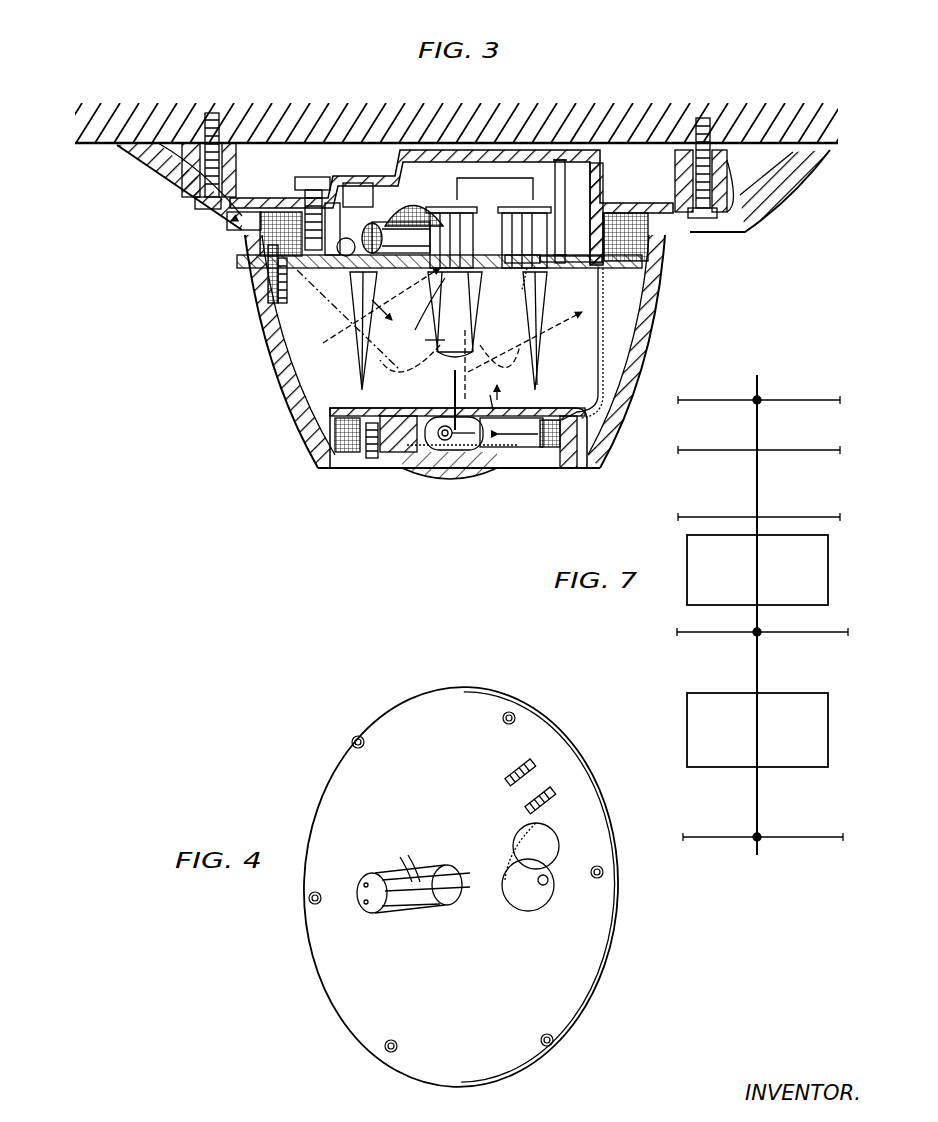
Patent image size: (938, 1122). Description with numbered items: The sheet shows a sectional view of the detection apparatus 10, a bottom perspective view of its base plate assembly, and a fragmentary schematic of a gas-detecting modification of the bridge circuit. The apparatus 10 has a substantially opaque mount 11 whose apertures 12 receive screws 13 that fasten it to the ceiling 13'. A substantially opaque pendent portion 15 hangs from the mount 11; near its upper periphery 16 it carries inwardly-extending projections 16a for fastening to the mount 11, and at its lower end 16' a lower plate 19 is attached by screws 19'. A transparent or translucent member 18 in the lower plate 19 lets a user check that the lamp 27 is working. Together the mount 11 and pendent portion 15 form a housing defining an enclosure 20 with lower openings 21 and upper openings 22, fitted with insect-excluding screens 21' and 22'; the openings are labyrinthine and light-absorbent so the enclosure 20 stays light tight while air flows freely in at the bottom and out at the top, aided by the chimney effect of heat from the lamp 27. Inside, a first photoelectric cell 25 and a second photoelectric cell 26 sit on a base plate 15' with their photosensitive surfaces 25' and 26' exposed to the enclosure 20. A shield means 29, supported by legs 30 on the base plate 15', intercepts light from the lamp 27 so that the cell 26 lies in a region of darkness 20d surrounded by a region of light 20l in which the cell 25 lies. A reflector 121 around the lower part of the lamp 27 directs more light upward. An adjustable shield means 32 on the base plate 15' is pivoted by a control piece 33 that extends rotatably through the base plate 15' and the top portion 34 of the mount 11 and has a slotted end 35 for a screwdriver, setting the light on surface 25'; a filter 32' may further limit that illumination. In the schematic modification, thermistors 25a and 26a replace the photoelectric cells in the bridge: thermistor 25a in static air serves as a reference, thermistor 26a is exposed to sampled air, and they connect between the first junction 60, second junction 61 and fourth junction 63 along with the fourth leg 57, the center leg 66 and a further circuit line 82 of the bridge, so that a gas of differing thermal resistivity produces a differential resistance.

In FIG. 3, the detection apparatus 10 is at (262, 410).
In FIG. 3, the mount 11 is at (153, 182).
In FIG. 3, the apertures 12 is at (200, 198).
In FIG. 3, the screws 13 is at (463, 130).
In FIG. 3, the ceiling 13' is at (456, 103).
In FIG. 3, the pendent portion 15 is at (467, 351).
In FIG. 3, the base plate 15' is at (439, 276).
In FIG. 4, the base plate 15' is at (461, 887).
In FIG. 3, the upper periphery 16 is at (631, 340).
In FIG. 3, the lower end 16' is at (345, 345).
In FIG. 3, the inwardly-extending projections 16a is at (504, 370).
In FIG. 3, the transparent or translucent member 18 is at (455, 480).
In FIG. 3, the lower plate 19 is at (459, 496).
In FIG. 3, the screws 19' is at (356, 464).
In FIG. 3, the enclosure 20 is at (368, 276).
In FIG. 3, the region of darkness 20d is at (408, 304).
In FIG. 3, the region of light 20l is at (585, 305).
In FIG. 3, the lower openings 21 is at (482, 439).
In FIG. 3, the insect-excluding screen 21' is at (520, 457).
In FIG. 3, the upper openings 22 is at (633, 217).
In FIG. 3, the insect-excluding screen 22' is at (290, 216).
In FIG. 3, the first photoelectric cell 25 is at (514, 227).
In FIG. 3, the photosensitive surface 25' is at (508, 285).
In FIG. 7, the thermistor 25a is at (828, 752).
In FIG. 3, the second photoelectric cell 26 is at (459, 216).
In FIG. 3, the photosensitive surface 26' is at (431, 312).
In FIG. 7, the thermistor 26a is at (828, 585).
In FIG. 3, the lamp 27 is at (450, 387).
In FIG. 3, the shield means 29 is at (525, 333).
In FIG. 4, the shield means 29 is at (365, 905).
In FIG. 3, the legs 30 is at (425, 340).
In FIG. 4, the legs 30 is at (404, 858).
In FIG. 3, the adjustable shield means 32 is at (571, 246).
In FIG. 4, the adjustable shield means 32 is at (530, 890).
In FIG. 3, the filter 32' is at (513, 290).
In FIG. 3, the control piece 33 is at (585, 213).
In FIG. 3, the top portion 34 is at (508, 150).
In FIG. 3, the slotted end 35 is at (563, 160).
In FIG. 7, the fourth leg 57 is at (814, 843).
In FIG. 7, the first junction 60 is at (753, 638).
In FIG. 7, the second junction 61 is at (763, 395).
In FIG. 7, the fourth junction 63 is at (756, 846).
In FIG. 7, the center leg 66 is at (798, 634).
In FIG. 7, the circuit lead 82 is at (705, 516).
In FIG. 3, the reflector 121 is at (430, 458).